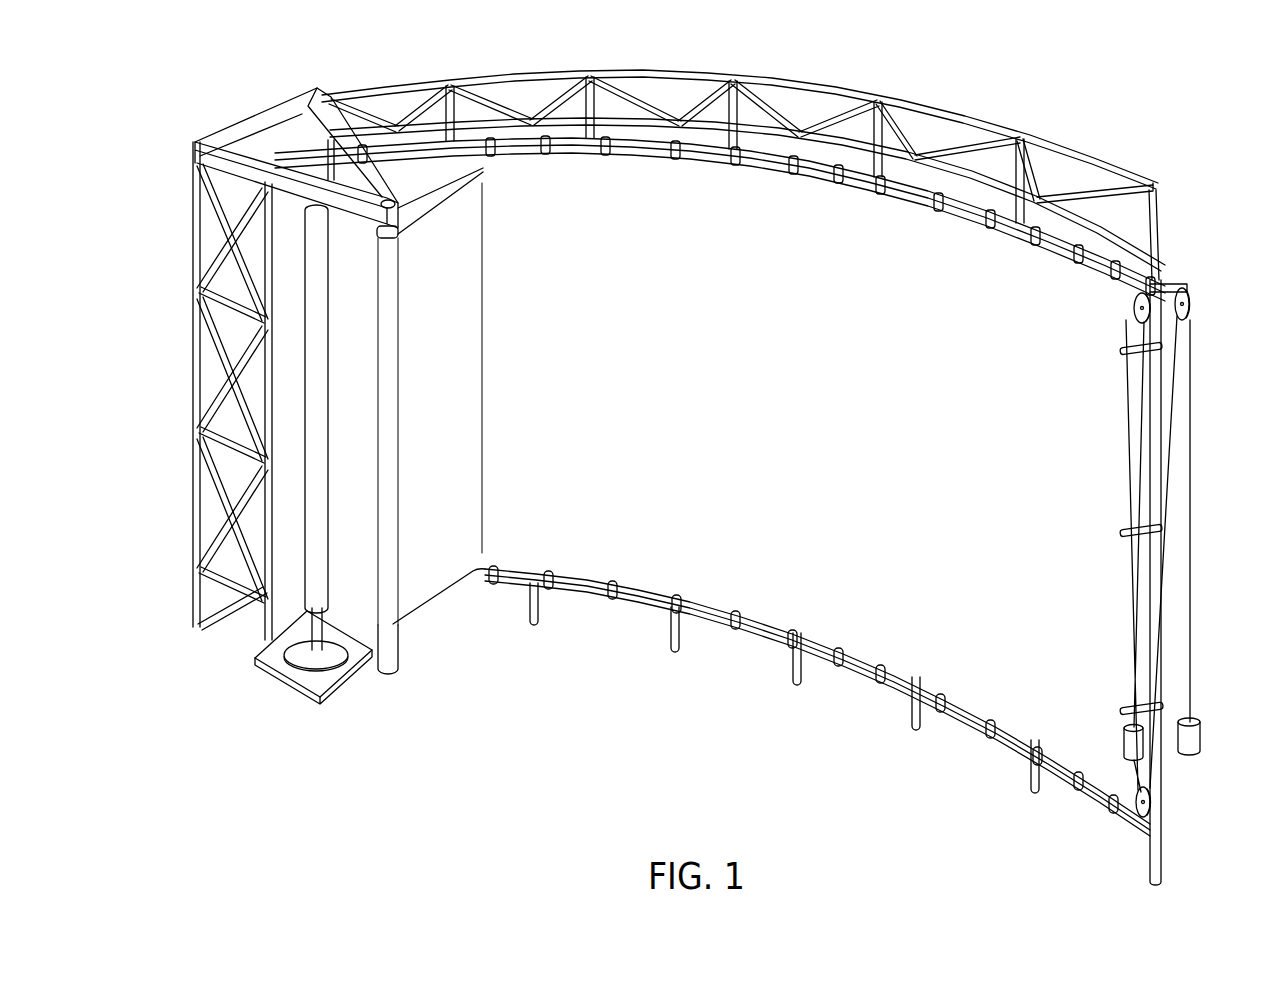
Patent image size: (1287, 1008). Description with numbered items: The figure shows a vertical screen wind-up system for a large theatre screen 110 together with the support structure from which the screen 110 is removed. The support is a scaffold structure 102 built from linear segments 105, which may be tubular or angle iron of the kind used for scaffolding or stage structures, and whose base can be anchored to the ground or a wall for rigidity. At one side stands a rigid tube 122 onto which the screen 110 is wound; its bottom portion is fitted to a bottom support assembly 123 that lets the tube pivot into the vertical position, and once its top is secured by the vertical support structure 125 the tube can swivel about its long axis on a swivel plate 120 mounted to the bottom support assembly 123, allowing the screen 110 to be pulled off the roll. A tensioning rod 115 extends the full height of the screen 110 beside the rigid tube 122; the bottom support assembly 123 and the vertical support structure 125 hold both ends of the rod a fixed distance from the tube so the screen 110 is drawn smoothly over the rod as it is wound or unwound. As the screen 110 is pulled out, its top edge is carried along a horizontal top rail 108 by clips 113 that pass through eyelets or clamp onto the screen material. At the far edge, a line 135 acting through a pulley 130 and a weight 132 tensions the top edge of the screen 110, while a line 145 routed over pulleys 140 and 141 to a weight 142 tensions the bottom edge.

The scaffold structure 102 is at (190, 246).
The linear segments 105 is at (825, 92).
The horizontal top rail 108 is at (903, 163).
The screen 110 is at (808, 346).
The clips 113 is at (606, 163).
The tensioning rod 115 is at (396, 667).
The swivel plate 120 is at (334, 672).
The rigid tube 122 is at (311, 650).
The bottom support assembly 123 is at (270, 692).
The vertical support structure 125 is at (255, 116).
The pulley 130 is at (1132, 313).
The weight 132 is at (1123, 746).
The line 135 is at (1138, 407).
The pulley 140 is at (1142, 822).
The pulley 141 is at (1192, 298).
The weight 142 is at (1202, 742).
The line 145 is at (1192, 610).